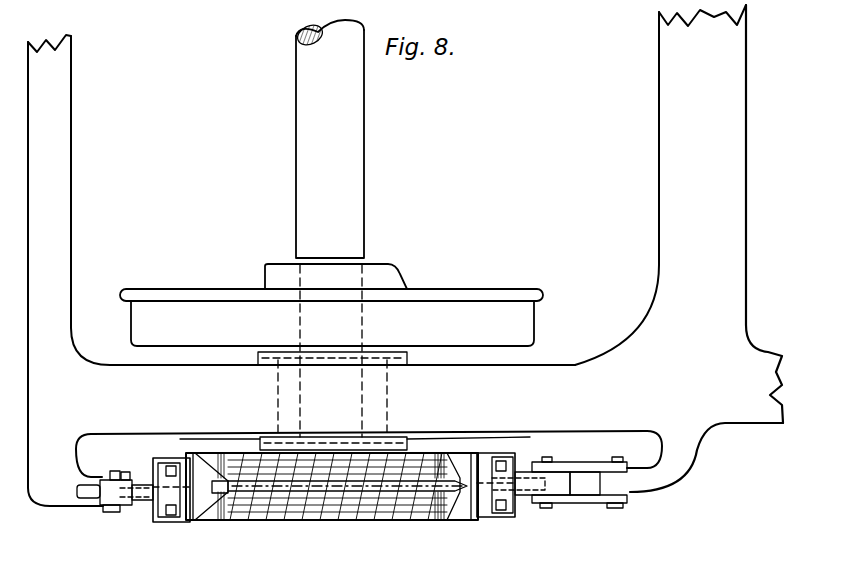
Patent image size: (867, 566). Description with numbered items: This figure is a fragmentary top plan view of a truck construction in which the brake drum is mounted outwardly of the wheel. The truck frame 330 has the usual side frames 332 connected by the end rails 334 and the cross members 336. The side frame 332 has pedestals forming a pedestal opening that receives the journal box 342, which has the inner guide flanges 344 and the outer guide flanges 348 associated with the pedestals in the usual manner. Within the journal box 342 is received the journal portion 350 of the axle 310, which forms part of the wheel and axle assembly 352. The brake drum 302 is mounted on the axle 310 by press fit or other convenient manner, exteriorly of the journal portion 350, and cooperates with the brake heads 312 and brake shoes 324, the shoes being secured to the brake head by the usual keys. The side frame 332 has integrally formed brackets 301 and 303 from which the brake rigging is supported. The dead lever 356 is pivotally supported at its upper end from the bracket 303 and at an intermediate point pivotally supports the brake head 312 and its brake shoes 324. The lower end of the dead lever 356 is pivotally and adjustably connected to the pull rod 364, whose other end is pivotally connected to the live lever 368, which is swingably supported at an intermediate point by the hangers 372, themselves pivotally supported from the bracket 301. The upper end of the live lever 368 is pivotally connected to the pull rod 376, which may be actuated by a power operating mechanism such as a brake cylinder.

The bracket 301 is at (683, 462).
The brake drum 302 is at (320, 507).
The bracket 303 is at (53, 490).
The axle 310 is at (345, 192).
The brake head 312 is at (513, 459).
The brake shoe 324 is at (187, 523).
The truck frame 330 is at (736, 346).
The side frame 332 is at (785, 420).
The end rail 334 is at (52, 192).
The cross member 336 is at (672, 190).
The journal box 342 is at (372, 392).
The inner guide flange 344 is at (262, 364).
The outer guide flange 348 is at (253, 440).
The journal portion 350 is at (316, 396).
The wheel and axle assembly 352 is at (528, 320).
The dead lever 356 is at (142, 486).
The pull rod 364 is at (233, 521).
The live lever 368 is at (580, 488).
The hanger 372 is at (590, 462).
The pull rod 376 is at (463, 521).